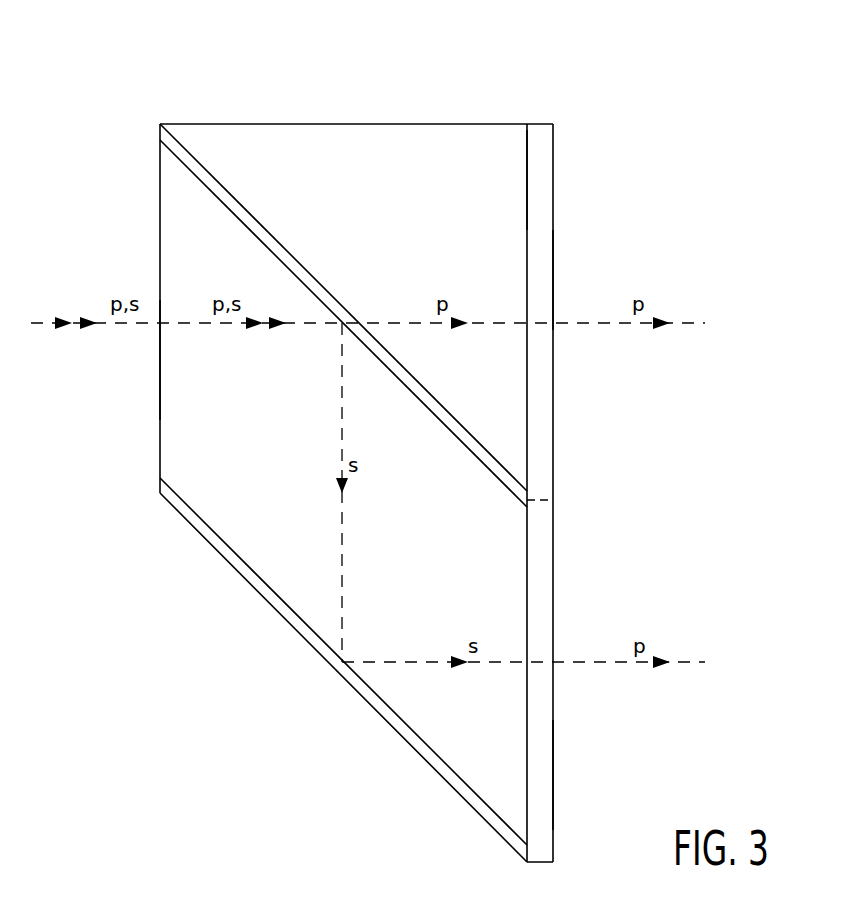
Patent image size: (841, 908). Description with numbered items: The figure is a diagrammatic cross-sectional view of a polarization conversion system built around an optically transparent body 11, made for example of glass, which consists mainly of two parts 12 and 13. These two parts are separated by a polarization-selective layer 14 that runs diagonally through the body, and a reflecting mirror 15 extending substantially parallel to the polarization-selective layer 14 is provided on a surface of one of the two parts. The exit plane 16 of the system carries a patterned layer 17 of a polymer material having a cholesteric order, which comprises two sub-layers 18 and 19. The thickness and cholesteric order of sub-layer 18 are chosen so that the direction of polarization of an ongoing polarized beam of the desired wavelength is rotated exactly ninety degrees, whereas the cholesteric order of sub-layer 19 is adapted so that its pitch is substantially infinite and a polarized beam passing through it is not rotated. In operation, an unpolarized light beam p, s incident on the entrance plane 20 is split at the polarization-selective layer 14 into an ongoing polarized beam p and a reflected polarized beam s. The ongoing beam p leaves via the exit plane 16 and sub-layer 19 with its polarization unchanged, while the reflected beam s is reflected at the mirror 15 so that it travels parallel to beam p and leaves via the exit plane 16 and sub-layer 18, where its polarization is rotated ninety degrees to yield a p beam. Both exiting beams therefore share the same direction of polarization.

The optically transparent body 11 is at (361, 444).
The first part of the body 12 is at (252, 150).
The second part of the body 13 is at (178, 438).
The polarization-selective layer 14 is at (202, 174).
The reflecting mirror 15 is at (298, 618).
The exit plane 16 is at (527, 178).
The patterned layer 17 is at (548, 112).
The first sub-layer 18 is at (543, 777).
The second sub-layer 19 is at (547, 277).
The entrance plane 20 is at (160, 387).